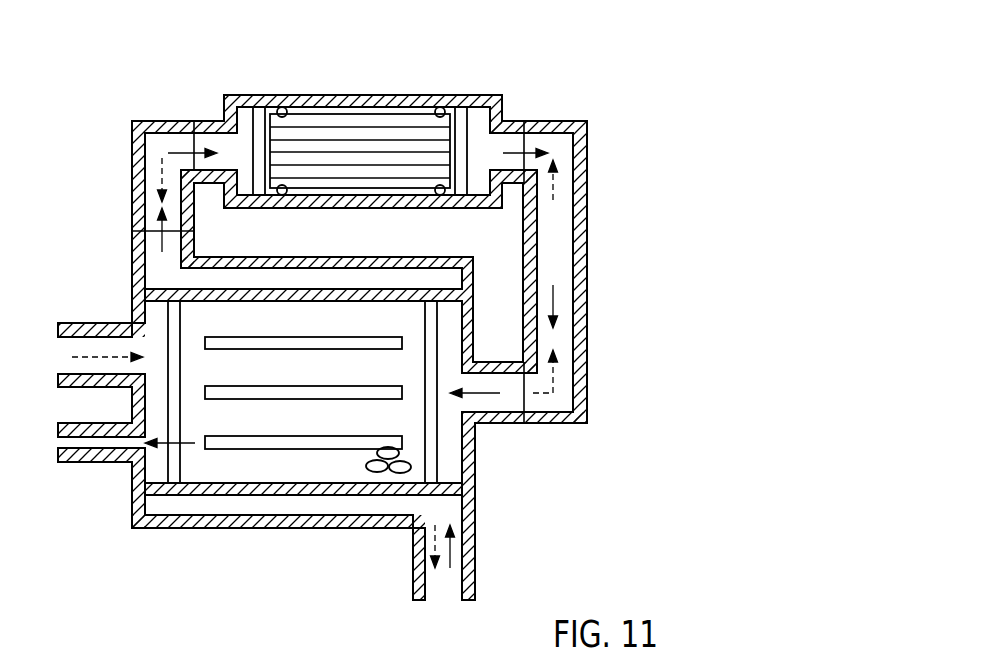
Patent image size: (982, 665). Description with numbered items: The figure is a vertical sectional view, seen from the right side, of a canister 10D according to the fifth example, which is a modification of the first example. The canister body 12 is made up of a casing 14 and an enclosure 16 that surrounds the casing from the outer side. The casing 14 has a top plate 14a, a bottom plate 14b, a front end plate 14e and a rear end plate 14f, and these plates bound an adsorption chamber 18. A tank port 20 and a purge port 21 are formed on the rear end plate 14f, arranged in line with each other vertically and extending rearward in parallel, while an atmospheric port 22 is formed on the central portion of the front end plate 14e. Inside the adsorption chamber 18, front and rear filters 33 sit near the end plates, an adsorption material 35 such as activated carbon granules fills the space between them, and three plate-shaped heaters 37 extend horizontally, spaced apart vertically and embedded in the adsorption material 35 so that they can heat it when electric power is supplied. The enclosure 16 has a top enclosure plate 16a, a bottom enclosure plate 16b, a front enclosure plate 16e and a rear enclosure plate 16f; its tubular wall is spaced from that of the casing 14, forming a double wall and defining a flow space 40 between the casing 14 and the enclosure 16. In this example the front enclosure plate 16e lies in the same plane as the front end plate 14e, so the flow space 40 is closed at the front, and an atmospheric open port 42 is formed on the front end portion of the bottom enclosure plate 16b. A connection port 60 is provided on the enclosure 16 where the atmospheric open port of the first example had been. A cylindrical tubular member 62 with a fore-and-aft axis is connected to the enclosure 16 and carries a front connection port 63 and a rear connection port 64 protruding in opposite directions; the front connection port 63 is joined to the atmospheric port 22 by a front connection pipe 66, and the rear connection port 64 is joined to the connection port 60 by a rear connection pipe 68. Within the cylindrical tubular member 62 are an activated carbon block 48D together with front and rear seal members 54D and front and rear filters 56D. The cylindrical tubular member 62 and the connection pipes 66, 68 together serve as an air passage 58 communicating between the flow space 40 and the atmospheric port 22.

The canister 10D is at (575, 57).
The canister body 12 is at (496, 463).
The casing 14 is at (125, 293).
The top plate 14a is at (222, 290).
The bottom plate 14b is at (221, 492).
The front end plate 14e is at (468, 462).
The rear end plate 14f is at (133, 468).
The enclosure 16 is at (328, 247).
The top enclosure plate 16a is at (430, 262).
The bottom enclosure plate 16b is at (316, 527).
The front enclosure plate 16e is at (475, 270).
The rear enclosure plate 16f is at (137, 513).
The adsorption chamber 18 is at (241, 471).
The tank port 20 is at (85, 323).
The purge port 21 is at (78, 458).
The atmospheric port 22 is at (500, 428).
The filters 33 is at (176, 473).
The adsorption material 35 is at (378, 472).
The heaters 37 is at (205, 393).
The flow space 40 is at (284, 511).
The atmospheric open port 42 is at (475, 585).
The activated carbon block 48D is at (376, 107).
The seal members 54D is at (282, 106).
The filters 56D is at (247, 127).
The air passage 58 is at (549, 237).
The connection port 60 is at (138, 245).
The cylindrical tubular member 62 is at (308, 100).
The front connection port 63 is at (510, 119).
The rear connection port 64 is at (205, 120).
The front connection pipe 66 is at (584, 320).
The rear connection pipe 68 is at (138, 173).